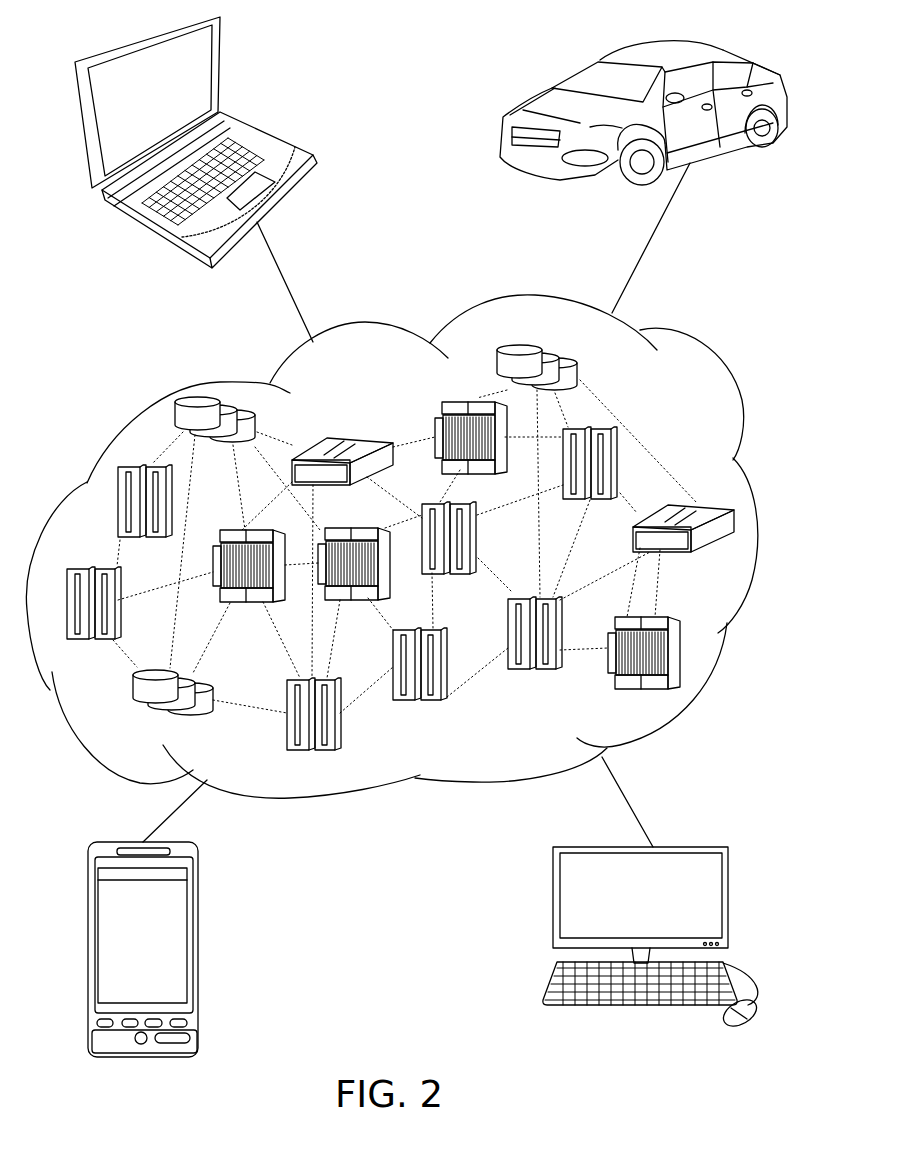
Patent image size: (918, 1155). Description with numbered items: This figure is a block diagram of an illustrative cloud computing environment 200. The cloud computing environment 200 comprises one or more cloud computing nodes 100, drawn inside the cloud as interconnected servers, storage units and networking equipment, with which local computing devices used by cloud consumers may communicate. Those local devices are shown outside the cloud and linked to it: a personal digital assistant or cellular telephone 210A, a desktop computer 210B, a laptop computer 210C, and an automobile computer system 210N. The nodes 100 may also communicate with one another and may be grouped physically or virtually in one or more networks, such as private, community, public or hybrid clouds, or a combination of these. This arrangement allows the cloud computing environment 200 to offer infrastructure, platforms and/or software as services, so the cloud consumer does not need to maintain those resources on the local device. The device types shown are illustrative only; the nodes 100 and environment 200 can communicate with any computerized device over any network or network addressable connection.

The laptop computer 210C is at (273, 138).
The automobile computer system 210N is at (747, 62).
The cloud computing environment 200 is at (397, 546).
The cloud computing node 100 is at (704, 500).
The personal digital assistant or cellular telephone 210A is at (195, 867).
The desktop computer 210B is at (768, 841).